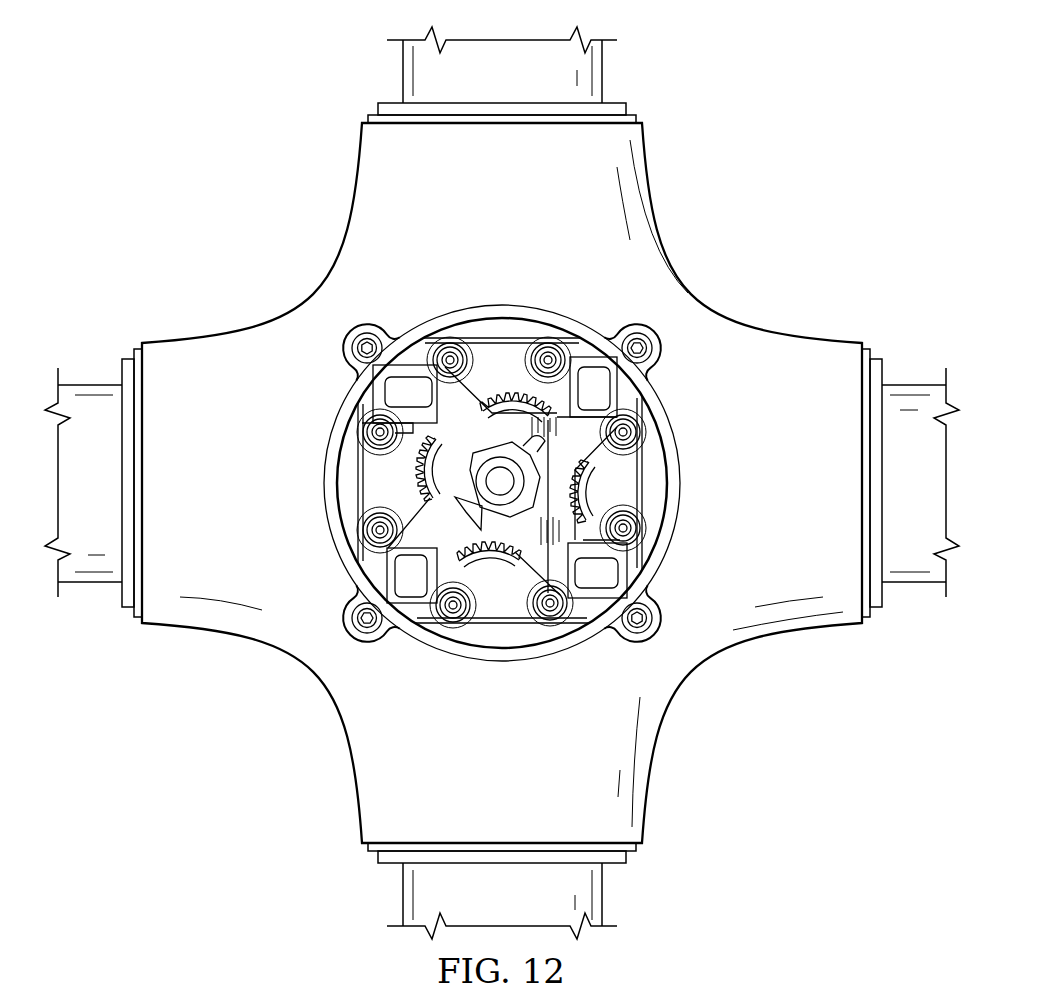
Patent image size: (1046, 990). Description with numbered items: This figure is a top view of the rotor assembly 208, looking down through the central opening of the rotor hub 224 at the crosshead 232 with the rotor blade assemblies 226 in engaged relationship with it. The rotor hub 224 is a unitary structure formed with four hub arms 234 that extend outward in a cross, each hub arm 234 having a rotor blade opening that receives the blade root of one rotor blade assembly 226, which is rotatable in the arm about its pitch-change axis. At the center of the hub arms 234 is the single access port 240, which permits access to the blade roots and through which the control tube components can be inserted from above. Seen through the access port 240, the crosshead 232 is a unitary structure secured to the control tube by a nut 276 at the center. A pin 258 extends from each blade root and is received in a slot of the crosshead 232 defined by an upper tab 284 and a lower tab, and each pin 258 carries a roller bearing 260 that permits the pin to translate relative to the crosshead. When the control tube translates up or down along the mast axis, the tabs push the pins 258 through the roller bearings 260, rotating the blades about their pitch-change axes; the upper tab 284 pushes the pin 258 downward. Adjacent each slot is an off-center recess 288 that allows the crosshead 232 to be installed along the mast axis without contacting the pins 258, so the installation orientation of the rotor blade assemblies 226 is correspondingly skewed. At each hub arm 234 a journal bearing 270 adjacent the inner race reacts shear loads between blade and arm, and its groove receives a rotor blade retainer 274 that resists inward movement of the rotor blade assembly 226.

The rotor assembly 208 is at (198, 122).
The rotor hub 224 is at (815, 628).
The rotor blade assembly 226 is at (399, 73).
The crosshead 232 is at (629, 413).
The hub arm 234 is at (361, 157).
The access port 240 is at (358, 490).
The pin 258 is at (373, 397).
The roller bearing 260 is at (547, 358).
The journal bearing 270 is at (127, 604).
The rotor blade retainer 274 is at (136, 350).
The nut 276 is at (470, 462).
The upper tab 284 is at (392, 365).
The recess 288 is at (512, 398).